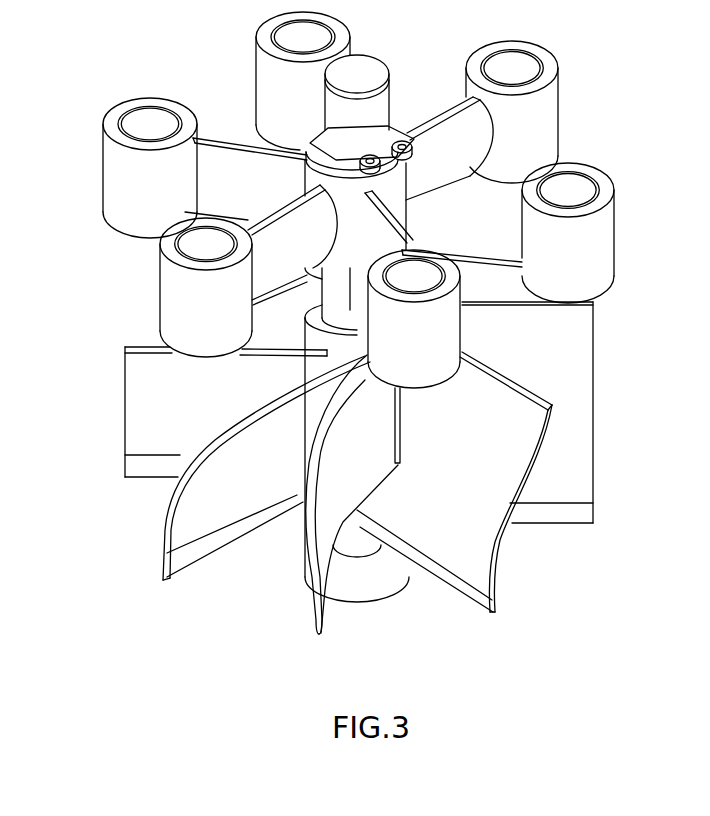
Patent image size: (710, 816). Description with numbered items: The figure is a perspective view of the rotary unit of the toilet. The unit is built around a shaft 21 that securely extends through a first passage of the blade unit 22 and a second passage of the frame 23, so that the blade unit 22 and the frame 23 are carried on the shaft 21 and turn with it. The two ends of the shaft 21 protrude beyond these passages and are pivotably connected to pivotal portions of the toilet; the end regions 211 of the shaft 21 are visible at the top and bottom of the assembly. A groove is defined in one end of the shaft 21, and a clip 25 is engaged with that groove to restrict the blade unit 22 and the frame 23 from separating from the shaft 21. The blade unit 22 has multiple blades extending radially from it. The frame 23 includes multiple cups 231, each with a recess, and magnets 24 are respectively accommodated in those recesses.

The shaft 21 is at (383, 578).
The shaft end 211 is at (366, 72).
The blade unit 22 is at (583, 378).
The frame 23 is at (120, 197).
The cup 231 is at (593, 270).
The magnet 24 is at (138, 118).
The clip 25 is at (312, 129).